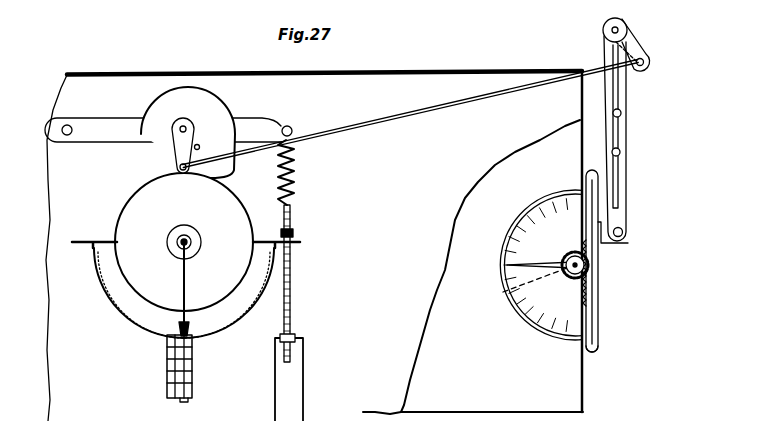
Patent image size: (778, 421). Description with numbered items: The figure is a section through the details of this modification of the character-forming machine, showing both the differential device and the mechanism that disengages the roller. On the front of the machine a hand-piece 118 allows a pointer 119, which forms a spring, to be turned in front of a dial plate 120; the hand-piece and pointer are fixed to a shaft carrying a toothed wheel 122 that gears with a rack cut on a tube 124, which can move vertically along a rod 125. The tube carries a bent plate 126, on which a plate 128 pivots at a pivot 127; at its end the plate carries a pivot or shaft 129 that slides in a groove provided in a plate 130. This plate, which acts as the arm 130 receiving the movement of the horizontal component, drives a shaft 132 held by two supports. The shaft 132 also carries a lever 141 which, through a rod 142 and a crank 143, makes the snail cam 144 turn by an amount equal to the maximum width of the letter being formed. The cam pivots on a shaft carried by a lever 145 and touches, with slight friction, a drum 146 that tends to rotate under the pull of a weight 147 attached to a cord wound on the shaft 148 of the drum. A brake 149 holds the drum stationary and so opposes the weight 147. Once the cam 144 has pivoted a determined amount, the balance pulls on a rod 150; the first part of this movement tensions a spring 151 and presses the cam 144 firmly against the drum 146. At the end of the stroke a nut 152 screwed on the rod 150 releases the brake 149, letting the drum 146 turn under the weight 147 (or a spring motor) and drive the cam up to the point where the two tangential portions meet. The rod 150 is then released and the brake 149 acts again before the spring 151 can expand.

The hand-piece 118 is at (570, 277).
The pointer 119 is at (540, 262).
The dial plate 120 is at (503, 241).
The toothed wheel 122 is at (508, 291).
The tube 124 is at (599, 274).
The rod 125 is at (600, 351).
The bent plate 126 is at (606, 245).
The pivot 127 is at (623, 232).
The plate 128 is at (621, 177).
The pivot or shaft 129 is at (621, 116).
The plate 130 is at (621, 92).
The shaft 132 is at (609, 29).
The lever 141 is at (630, 52).
The rod 142 is at (403, 115).
The crank 143 is at (181, 146).
The snail cam 144 is at (210, 113).
The lever 145 is at (97, 130).
The drum 146 is at (223, 198).
The weight 147 is at (170, 352).
The shaft 148 is at (190, 250).
The brake 149 is at (219, 314).
The rod 150 is at (292, 304).
The spring 151 is at (293, 170).
The nut 152 is at (296, 233).